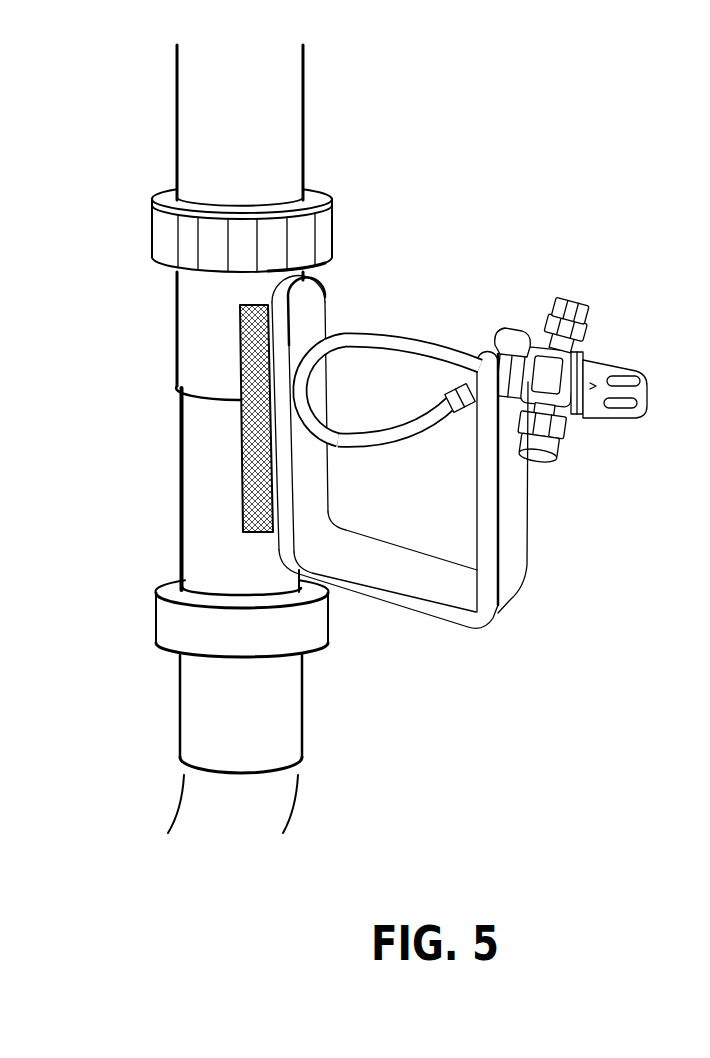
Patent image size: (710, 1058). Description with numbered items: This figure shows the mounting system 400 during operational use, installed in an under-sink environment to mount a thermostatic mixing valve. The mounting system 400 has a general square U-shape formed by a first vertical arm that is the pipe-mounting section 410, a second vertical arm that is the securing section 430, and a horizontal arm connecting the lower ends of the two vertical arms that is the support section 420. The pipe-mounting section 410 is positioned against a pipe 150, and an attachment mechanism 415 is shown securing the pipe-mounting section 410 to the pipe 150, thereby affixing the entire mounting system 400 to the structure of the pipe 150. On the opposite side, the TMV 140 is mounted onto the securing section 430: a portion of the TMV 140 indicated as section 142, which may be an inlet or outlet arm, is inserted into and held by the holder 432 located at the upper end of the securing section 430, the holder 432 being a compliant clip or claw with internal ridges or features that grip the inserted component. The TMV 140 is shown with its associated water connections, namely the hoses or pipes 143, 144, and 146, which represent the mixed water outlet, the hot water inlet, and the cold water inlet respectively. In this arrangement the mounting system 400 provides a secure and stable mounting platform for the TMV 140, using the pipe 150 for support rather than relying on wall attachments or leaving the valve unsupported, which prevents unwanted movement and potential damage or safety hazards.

The pipe 150 is at (208, 307).
The attachment mechanism 415 is at (247, 382).
The mounting system 400 is at (477, 429).
The pipe-mounting section 410 is at (310, 403).
The hose/pipe (mixed water outlet) 143 is at (380, 443).
The support section 420 is at (397, 560).
The securing section 430 is at (448, 452).
The holder 432 is at (517, 328).
The section 142 is at (511, 375).
The hose/pipe (hot water inlet) 144 is at (566, 325).
The TMV 140 is at (609, 385).
The hose/pipe (cold water inlet) 146 is at (541, 433).